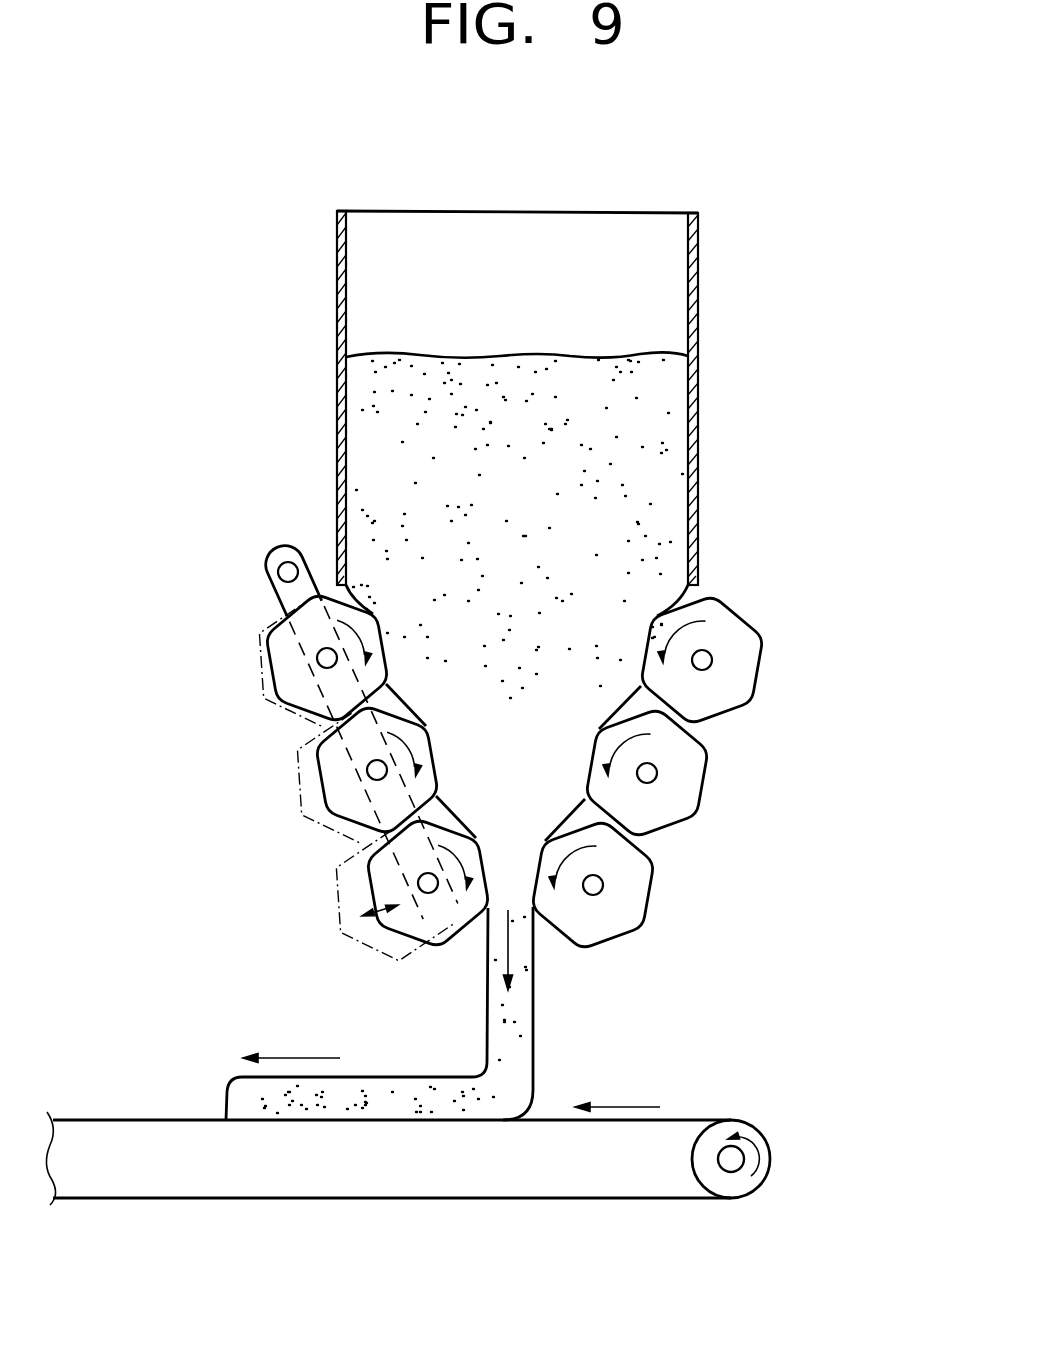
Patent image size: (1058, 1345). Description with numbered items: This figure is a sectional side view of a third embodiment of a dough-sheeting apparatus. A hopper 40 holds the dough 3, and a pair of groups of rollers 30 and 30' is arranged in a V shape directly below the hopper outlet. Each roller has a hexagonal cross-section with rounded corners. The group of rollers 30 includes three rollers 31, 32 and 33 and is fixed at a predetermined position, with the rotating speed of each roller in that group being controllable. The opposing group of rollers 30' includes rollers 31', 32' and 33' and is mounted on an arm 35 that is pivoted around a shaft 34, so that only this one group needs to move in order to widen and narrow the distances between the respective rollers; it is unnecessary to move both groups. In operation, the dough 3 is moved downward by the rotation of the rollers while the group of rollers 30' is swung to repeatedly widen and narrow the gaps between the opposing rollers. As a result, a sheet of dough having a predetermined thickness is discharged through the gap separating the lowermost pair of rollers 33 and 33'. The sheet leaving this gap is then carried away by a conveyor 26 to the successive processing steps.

The dough 3 is at (537, 356).
The conveyor 26 is at (673, 1120).
The group of rollers 30 is at (907, 721).
The group of rollers 30' is at (126, 752).
The roller 31 is at (753, 659).
The roller 32 is at (726, 773).
The roller 33 is at (699, 885).
The roller 31' is at (277, 658).
The roller 32' is at (302, 770).
The roller 33' is at (328, 883).
The shaft 34 is at (290, 561).
The arm 35 is at (269, 574).
The hopper 40 is at (699, 250).